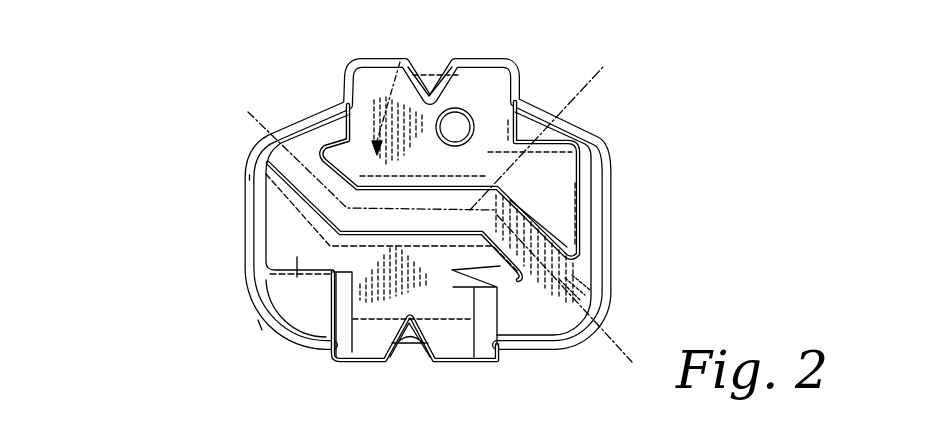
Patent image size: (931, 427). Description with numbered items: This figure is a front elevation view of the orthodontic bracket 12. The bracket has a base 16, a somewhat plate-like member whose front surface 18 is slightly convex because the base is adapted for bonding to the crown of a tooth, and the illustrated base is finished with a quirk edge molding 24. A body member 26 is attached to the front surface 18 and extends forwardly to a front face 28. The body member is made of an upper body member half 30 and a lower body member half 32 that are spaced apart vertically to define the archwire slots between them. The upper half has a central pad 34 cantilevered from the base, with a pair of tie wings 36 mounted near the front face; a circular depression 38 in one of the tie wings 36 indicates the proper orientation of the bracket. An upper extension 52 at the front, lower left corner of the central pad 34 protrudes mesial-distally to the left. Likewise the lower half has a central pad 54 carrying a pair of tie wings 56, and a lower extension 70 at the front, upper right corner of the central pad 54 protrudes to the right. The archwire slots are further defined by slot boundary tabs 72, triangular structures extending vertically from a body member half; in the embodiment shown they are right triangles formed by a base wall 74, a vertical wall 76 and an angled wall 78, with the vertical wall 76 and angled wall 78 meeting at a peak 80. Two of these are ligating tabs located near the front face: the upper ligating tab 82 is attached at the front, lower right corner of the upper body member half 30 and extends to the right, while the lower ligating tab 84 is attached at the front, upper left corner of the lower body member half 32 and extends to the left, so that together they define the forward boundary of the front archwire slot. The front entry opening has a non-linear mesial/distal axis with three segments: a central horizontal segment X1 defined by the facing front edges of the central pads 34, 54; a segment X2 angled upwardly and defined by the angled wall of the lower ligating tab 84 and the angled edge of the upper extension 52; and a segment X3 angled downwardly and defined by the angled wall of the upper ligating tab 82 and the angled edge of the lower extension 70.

The bracket 12 is at (340, 68).
The base 16 is at (334, 108).
The front surface 18 is at (250, 300).
The quirk edge molding 24 is at (300, 273).
The body member 26 is at (330, 352).
The front face 28 is at (463, 313).
The upper body member half 30 is at (400, 62).
The lower body member half 32 is at (330, 355).
The central pad 34 is at (428, 80).
The tie wings 36 is at (470, 62).
The circular depression 38 is at (474, 118).
The upper extension 52 is at (327, 142).
The central pad 54 is at (408, 318).
The tie wings 56 is at (368, 364).
The lower extension 70 is at (500, 262).
The slot boundary tabs 72 is at (283, 212).
The base wall 74 is at (365, 298).
The vertical wall 76 is at (250, 228).
The angled wall 78 is at (252, 142).
The peak 80 is at (258, 153).
The upper ligating tab 82 is at (560, 160).
The lower ligating tab 84 is at (262, 323).
The first segment X1 is at (567, 98).
The second segment X2 is at (258, 120).
The third segment X3 is at (618, 342).